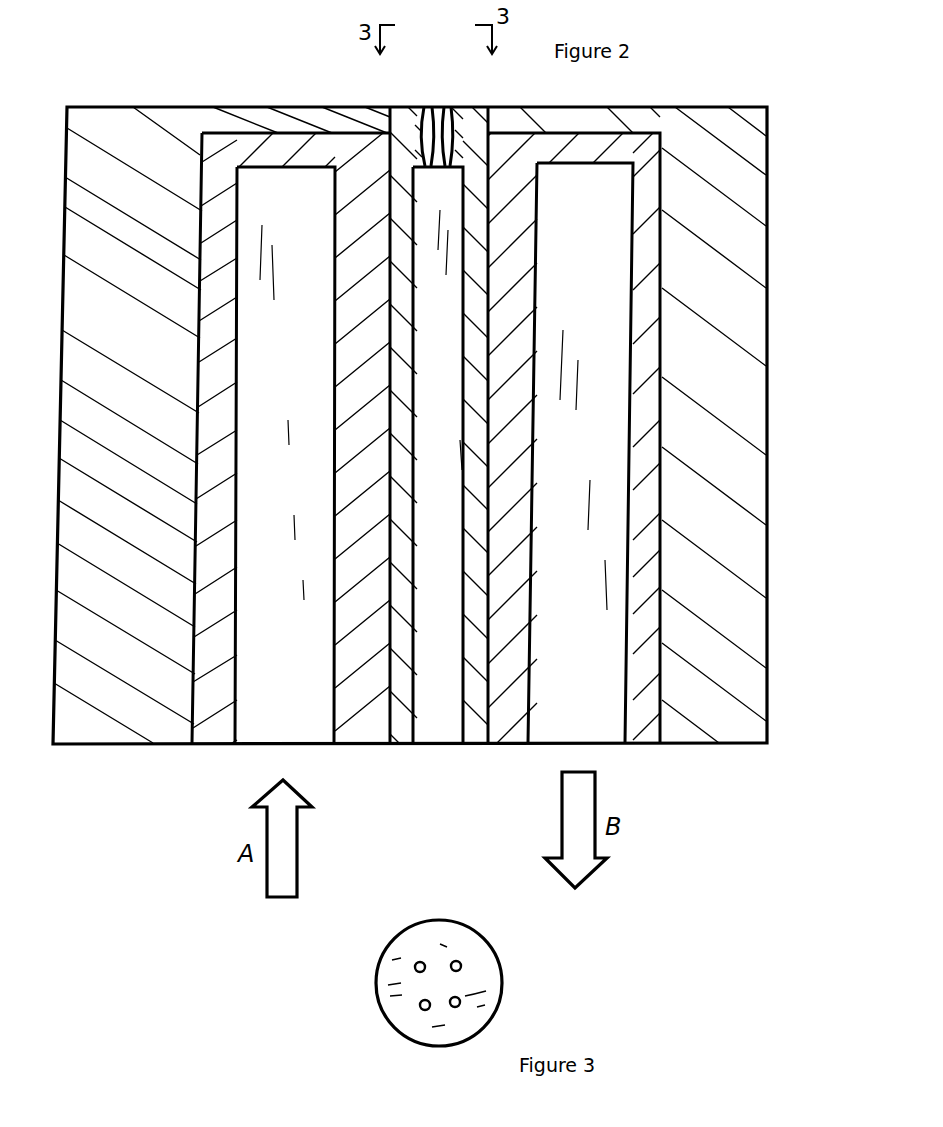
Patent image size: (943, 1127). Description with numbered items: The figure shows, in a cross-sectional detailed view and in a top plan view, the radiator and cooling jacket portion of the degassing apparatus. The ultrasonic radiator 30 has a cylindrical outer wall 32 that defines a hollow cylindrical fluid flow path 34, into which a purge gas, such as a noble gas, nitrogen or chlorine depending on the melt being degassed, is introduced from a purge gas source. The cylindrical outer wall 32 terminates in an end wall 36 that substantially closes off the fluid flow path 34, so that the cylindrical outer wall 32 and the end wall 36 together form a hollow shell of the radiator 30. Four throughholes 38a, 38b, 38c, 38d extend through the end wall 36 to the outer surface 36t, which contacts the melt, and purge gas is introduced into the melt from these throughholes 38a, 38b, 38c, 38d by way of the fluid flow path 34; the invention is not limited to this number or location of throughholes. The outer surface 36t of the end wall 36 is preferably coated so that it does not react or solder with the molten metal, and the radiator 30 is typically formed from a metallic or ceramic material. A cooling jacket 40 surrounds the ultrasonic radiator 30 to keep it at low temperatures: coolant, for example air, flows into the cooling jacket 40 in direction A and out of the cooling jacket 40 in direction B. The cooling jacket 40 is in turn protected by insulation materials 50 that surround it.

In FIG. 2, the ultrasonic radiator 30 is at (741, 770).
In FIG. 3, the ultrasonic radiator 30 is at (540, 993).
In FIG. 2, the cylindrical outer wall 32 is at (473, 745).
In FIG. 3, the cylindrical outer wall 32 is at (495, 947).
In FIG. 2, the fluid flow path 34 is at (436, 757).
In FIG. 2, the end wall 36 is at (468, 112).
In FIG. 3, the outer surface 36t is at (479, 986).
In FIG. 3, the throughhole 38a is at (424, 1009).
In FIG. 3, the throughhole 38b is at (455, 1009).
In FIG. 2, the throughhole 38c is at (428, 105).
In FIG. 3, the throughhole 38c is at (418, 961).
In FIG. 2, the throughhole 38d is at (444, 105).
In FIG. 3, the throughhole 38d is at (458, 960).
In FIG. 2, the cooling jacket 40 is at (215, 765).
In FIG. 2, the insulation materials 50 is at (98, 728).